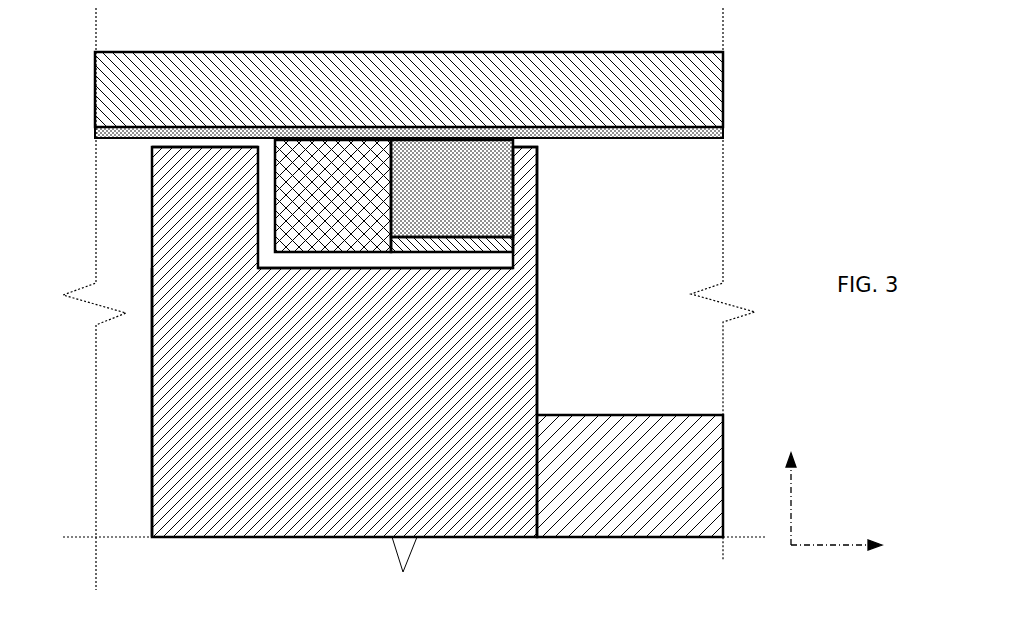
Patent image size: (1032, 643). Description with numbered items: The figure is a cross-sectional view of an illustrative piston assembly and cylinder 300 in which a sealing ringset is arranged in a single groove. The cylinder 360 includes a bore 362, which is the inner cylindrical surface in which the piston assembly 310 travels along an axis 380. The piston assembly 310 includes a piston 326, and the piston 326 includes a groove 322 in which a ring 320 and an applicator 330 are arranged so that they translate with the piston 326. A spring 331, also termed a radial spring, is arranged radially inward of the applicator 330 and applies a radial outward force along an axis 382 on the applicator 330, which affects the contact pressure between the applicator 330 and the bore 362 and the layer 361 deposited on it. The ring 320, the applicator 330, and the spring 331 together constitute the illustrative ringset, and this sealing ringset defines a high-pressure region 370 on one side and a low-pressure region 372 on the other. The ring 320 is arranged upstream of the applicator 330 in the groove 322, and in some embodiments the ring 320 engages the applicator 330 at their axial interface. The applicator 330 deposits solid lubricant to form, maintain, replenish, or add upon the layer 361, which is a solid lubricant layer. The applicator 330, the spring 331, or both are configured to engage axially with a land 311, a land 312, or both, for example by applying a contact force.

The piston assembly and cylinder 300 is at (414, 299).
The piston assembly 310 is at (150, 237).
The land 311 is at (538, 192).
The land 312 is at (243, 190).
The ring 320 is at (333, 196).
The groove 322 is at (465, 268).
The piston 326 is at (344, 402).
The applicator 330 is at (452, 188).
The spring 331 is at (538, 258).
The cylinder 360 is at (409, 89).
The layer 361 is at (724, 132).
The bore 362 is at (703, 140).
The high-pressure region 370 is at (136, 436).
The low-pressure region 372 is at (692, 392).
The axis 380 is at (863, 540).
The axis 382 is at (792, 483).